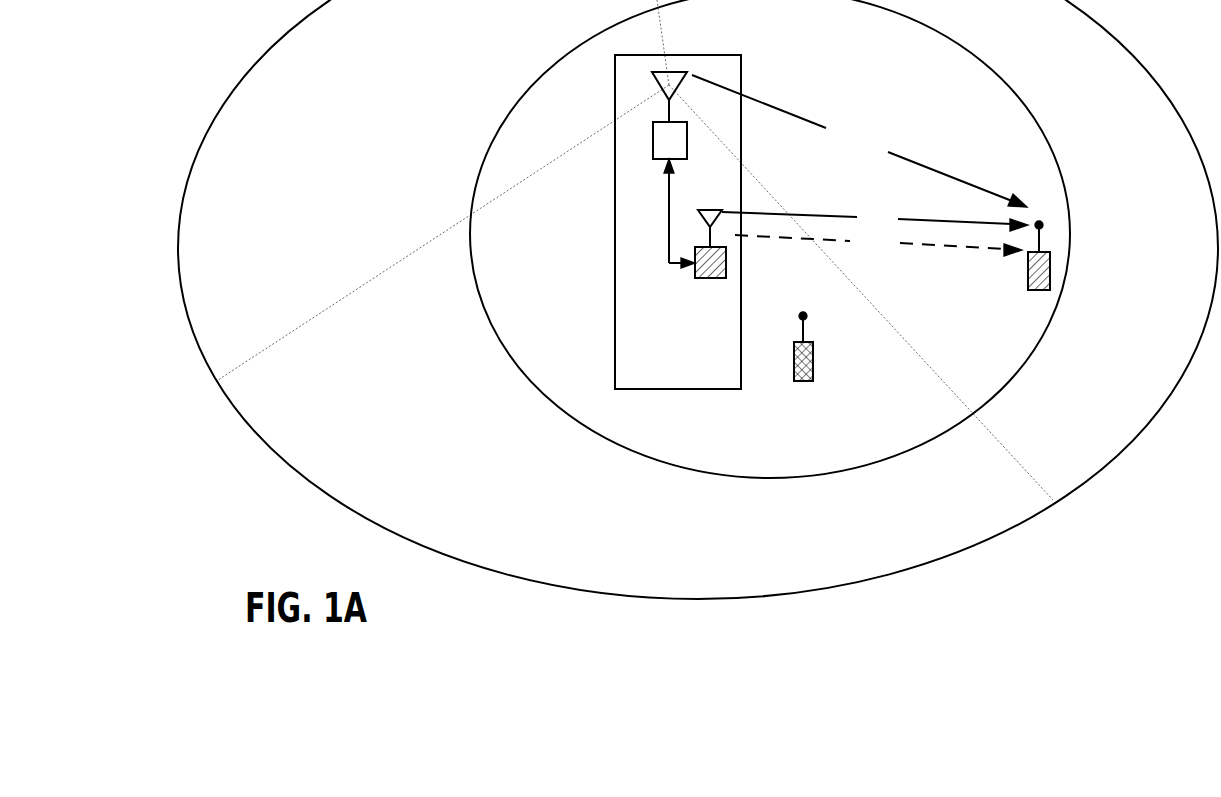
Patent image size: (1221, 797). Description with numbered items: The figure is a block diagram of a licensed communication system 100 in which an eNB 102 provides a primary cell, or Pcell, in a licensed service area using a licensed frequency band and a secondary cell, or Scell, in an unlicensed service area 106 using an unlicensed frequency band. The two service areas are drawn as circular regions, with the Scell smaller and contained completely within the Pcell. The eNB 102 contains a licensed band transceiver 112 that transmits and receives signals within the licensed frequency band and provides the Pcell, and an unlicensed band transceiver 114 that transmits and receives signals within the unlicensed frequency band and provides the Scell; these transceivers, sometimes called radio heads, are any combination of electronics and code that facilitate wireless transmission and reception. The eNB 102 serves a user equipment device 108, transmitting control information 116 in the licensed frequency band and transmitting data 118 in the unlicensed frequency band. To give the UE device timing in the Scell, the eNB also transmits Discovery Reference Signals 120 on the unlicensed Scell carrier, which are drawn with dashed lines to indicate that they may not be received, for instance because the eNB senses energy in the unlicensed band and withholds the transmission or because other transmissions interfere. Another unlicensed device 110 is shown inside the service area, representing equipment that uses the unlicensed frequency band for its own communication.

The licensed communication system 100 is at (470, 625).
The eNB 102 is at (663, 377).
The unlicensed service area 106 is at (1037, 115).
The user equipment device 108 is at (1050, 272).
The unlicensed device 110 is at (813, 362).
The licensed band transceiver 112 is at (653, 118).
The unlicensed band transceiver 114 is at (715, 283).
The control information 116 is at (798, 115).
The data 118 is at (752, 210).
The Discovery Reference Signals 120 is at (757, 237).